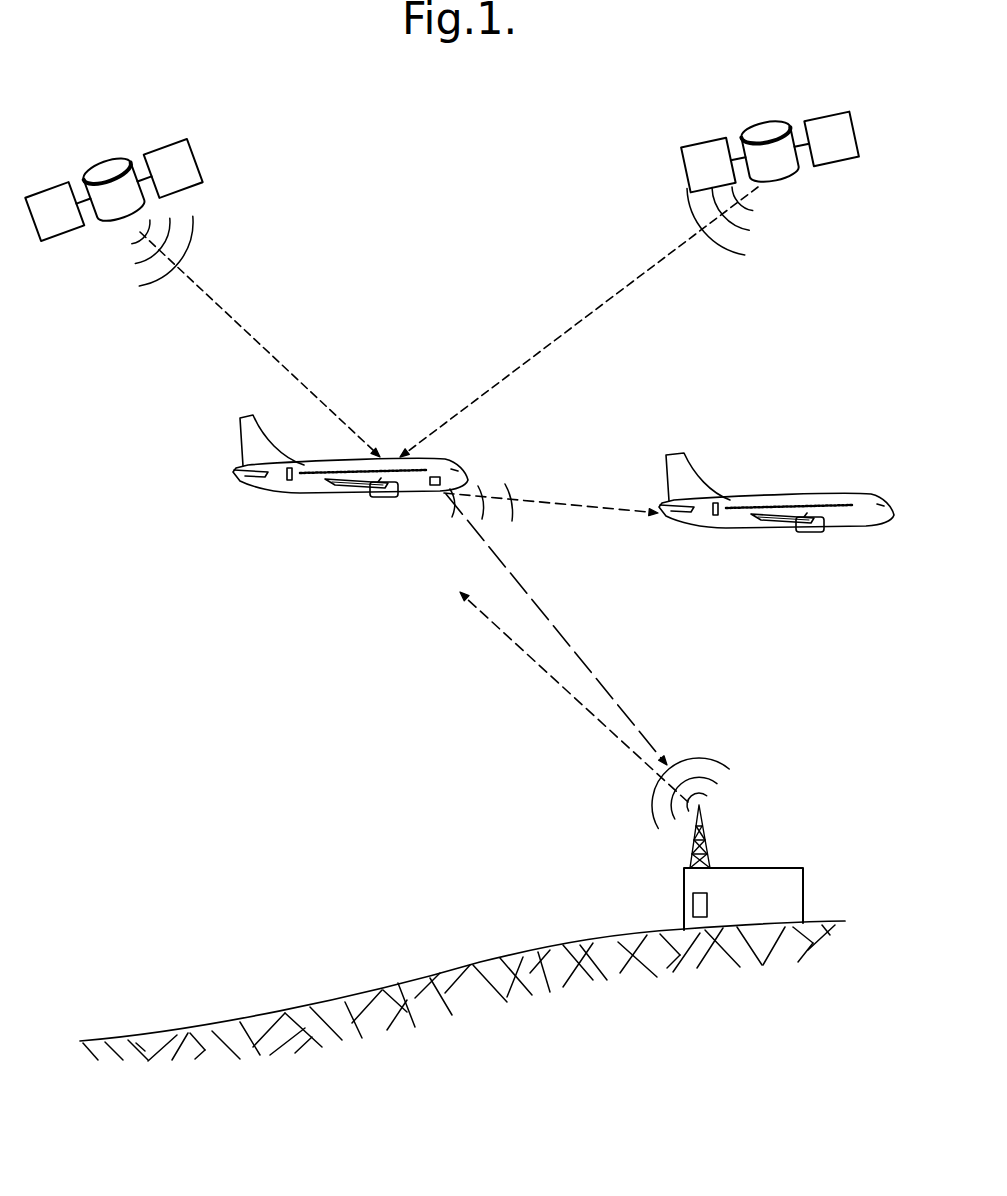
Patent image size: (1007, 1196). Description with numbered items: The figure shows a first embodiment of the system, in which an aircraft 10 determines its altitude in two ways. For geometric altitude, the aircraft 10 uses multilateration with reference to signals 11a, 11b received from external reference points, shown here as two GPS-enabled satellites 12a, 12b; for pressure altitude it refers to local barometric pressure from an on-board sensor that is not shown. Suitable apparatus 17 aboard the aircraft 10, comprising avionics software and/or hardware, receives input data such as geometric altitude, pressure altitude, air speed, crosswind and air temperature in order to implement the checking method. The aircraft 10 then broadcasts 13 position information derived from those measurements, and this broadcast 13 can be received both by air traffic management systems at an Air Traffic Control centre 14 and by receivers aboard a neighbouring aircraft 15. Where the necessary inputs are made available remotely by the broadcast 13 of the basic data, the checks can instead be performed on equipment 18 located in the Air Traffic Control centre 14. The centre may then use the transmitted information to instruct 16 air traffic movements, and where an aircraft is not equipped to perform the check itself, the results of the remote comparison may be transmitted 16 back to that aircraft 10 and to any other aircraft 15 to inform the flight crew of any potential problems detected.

The aircraft 10 is at (318, 485).
The signal 11a is at (235, 318).
The signal 11b is at (553, 340).
The GPS-enabled satellite 12a is at (113, 172).
The GPS-enabled satellite 12b is at (764, 132).
The broadcast 13 is at (568, 503).
The Air Traffic Control centre 14 is at (778, 876).
The neighbouring aircraft 15 is at (803, 500).
The instruction transmission 16 is at (558, 683).
The apparatus 17 is at (437, 474).
The equipment 18 is at (697, 903).